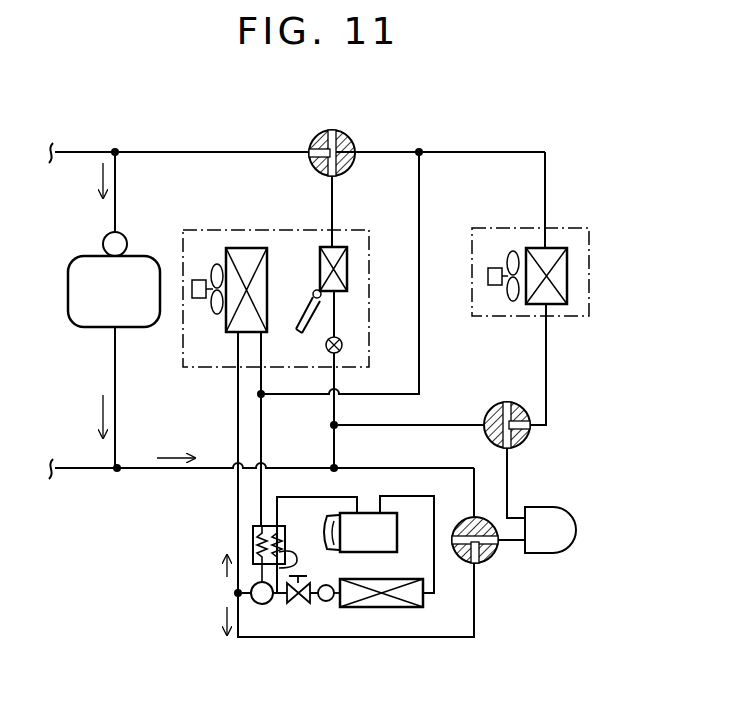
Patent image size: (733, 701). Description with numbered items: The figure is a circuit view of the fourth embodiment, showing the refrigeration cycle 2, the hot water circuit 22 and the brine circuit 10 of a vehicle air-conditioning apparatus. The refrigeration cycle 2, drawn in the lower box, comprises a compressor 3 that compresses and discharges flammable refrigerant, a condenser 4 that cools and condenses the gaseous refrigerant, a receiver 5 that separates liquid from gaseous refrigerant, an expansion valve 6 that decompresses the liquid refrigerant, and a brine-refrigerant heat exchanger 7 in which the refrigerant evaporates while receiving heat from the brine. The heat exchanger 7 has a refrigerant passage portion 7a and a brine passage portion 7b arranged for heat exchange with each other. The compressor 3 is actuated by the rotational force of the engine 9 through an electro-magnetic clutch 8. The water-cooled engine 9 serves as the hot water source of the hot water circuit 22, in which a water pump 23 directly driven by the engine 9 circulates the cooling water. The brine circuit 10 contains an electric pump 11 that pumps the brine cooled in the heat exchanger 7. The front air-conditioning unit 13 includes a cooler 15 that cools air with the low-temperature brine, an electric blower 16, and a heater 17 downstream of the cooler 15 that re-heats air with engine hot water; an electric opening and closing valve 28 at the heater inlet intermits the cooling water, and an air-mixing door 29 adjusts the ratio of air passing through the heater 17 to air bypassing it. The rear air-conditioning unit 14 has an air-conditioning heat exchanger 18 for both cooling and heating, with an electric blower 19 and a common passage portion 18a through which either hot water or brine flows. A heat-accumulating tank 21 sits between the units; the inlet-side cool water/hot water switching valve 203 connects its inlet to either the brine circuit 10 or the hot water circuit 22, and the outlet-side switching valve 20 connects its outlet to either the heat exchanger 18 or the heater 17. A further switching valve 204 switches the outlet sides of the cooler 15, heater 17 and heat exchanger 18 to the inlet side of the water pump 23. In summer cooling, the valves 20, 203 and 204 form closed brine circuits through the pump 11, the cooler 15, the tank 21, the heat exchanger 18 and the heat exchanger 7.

The refrigeration cycle 2 is at (441, 600).
The compressor 3 is at (397, 533).
The condenser 4 is at (381, 607).
The receiver 5 is at (326, 602).
The expansion valve 6 is at (295, 605).
The brine-refrigerant heat exchanger 7 is at (252, 537).
The refrigerant passage portion 7a is at (277, 570).
The brine passage portion 7b is at (252, 546).
The electro-magnetic clutch 8 is at (325, 522).
The engine 9 is at (68, 280).
The brine circuit 10 is at (228, 486).
The electric pump 11 is at (260, 605).
The front air-conditioning unit 13 is at (197, 230).
The rear air-conditioning unit 14 is at (589, 236).
The cooler 15 is at (242, 257).
The blower 16 is at (207, 268).
The heater 17 is at (340, 247).
The air-conditioning heat exchanger 18 is at (567, 275).
The common passage portion 18a is at (546, 176).
The blower 19 is at (512, 250).
The cool water/hot water switching valve 20 is at (527, 445).
The heat-accumulating tank 21 is at (576, 530).
The hot water circuit 22 is at (70, 146).
The water pump 23 is at (122, 232).
The opening and closing valve 28 is at (341, 345).
The air-mixing door 29 is at (303, 300).
The cool water/hot water switching valve 203 is at (490, 561).
The cool water/hot water switching valve 204 is at (336, 130).